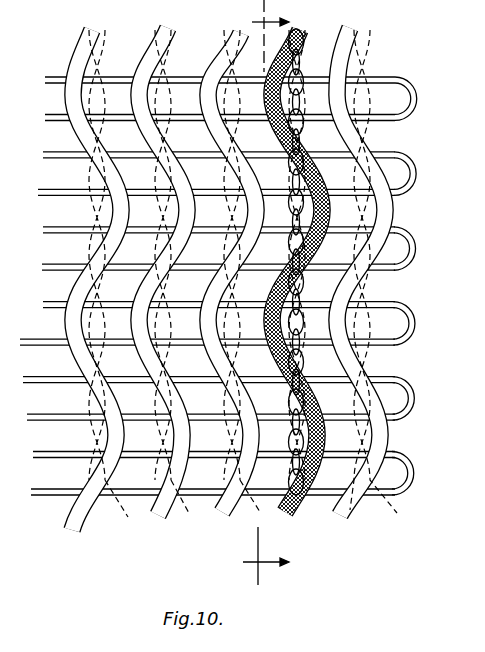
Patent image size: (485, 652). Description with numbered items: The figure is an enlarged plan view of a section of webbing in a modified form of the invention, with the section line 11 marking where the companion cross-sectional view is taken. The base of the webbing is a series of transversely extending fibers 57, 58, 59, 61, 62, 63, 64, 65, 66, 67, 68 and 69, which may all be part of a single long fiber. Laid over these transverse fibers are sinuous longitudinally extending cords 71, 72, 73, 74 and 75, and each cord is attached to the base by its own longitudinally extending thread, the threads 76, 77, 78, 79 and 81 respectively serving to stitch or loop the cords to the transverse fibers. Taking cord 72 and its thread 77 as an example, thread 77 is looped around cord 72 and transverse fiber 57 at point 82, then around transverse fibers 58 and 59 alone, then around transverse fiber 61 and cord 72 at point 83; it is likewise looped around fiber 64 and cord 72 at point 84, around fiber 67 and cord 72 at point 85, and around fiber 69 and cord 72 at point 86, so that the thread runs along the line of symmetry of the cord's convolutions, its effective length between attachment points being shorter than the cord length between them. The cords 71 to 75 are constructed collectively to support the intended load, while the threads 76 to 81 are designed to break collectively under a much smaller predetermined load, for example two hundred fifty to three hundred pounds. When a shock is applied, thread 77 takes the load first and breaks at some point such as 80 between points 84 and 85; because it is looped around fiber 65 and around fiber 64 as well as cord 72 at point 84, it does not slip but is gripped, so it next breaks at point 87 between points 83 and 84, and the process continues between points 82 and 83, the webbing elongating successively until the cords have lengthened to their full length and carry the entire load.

The section line 11 is at (267, 293).
The transverse fiber 57 is at (58, 496).
The transverse fiber 58 is at (62, 458).
The transverse fiber 59 is at (58, 421).
The transverse fiber 61 is at (54, 383).
The transverse fiber 62 is at (55, 346).
The transverse fiber 63 is at (54, 308).
The transverse fiber 64 is at (58, 271).
The transverse fiber 65 is at (64, 233).
The transverse fiber 66 is at (62, 196).
The transverse fiber 67 is at (60, 158).
The transverse fiber 68 is at (60, 121).
The transverse fiber 69 is at (59, 84).
The longitudinal cord 71 is at (350, 510).
The longitudinal cord 72 is at (287, 518).
The longitudinal cord 73 is at (222, 512).
The longitudinal cord 74 is at (152, 514).
The longitudinal cord 75 is at (83, 518).
The longitudinal thread 76 is at (397, 513).
The longitudinal thread 77 is at (327, 518).
The longitudinal thread 78 is at (261, 512).
The longitudinal thread 79 is at (190, 515).
The break point 80 is at (296, 260).
The longitudinal thread 81 is at (128, 518).
The attachment point 82 is at (288, 483).
The attachment point 83 is at (292, 388).
The attachment point 84 is at (289, 246).
The attachment point 85 is at (289, 165).
The attachment point 86 is at (306, 46).
The break point 87 is at (303, 290).